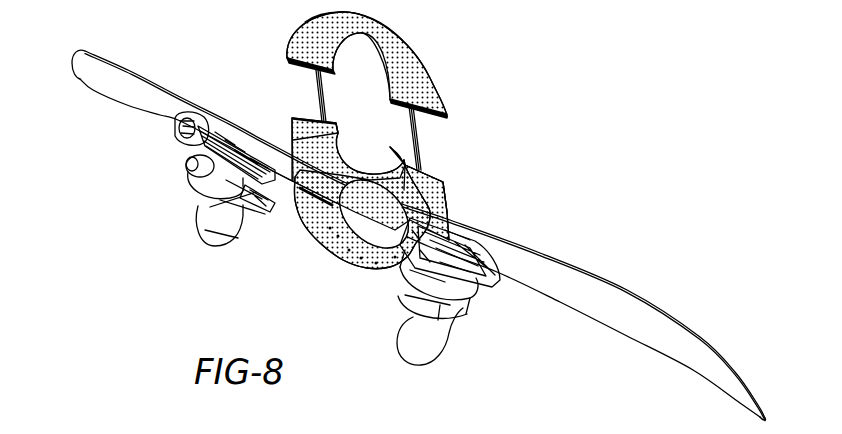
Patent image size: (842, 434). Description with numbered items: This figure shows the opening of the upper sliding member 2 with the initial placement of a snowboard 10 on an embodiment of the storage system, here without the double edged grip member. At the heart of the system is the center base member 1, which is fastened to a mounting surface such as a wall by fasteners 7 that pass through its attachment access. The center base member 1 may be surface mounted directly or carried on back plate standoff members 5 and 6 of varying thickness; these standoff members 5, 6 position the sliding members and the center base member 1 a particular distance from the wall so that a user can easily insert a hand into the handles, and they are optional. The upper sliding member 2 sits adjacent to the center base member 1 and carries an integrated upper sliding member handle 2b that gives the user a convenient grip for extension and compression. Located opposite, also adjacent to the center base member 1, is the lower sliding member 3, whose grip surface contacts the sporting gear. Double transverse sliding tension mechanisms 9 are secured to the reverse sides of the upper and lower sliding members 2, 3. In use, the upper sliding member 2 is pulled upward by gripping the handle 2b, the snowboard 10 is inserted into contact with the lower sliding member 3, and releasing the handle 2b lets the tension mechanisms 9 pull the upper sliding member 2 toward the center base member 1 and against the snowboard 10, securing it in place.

The center base member 1 is at (399, 176).
The upper sliding member 2 is at (417, 65).
The upper sliding member handle 2b is at (370, 25).
The lower sliding member 3 is at (338, 255).
The back plate standoff member 5 is at (349, 128).
The back plate standoff member 6 is at (446, 167).
The fasteners 7 is at (343, 145).
The double transverse sliding tension mechanisms 9 is at (306, 89).
The snowboard 10 is at (631, 283).